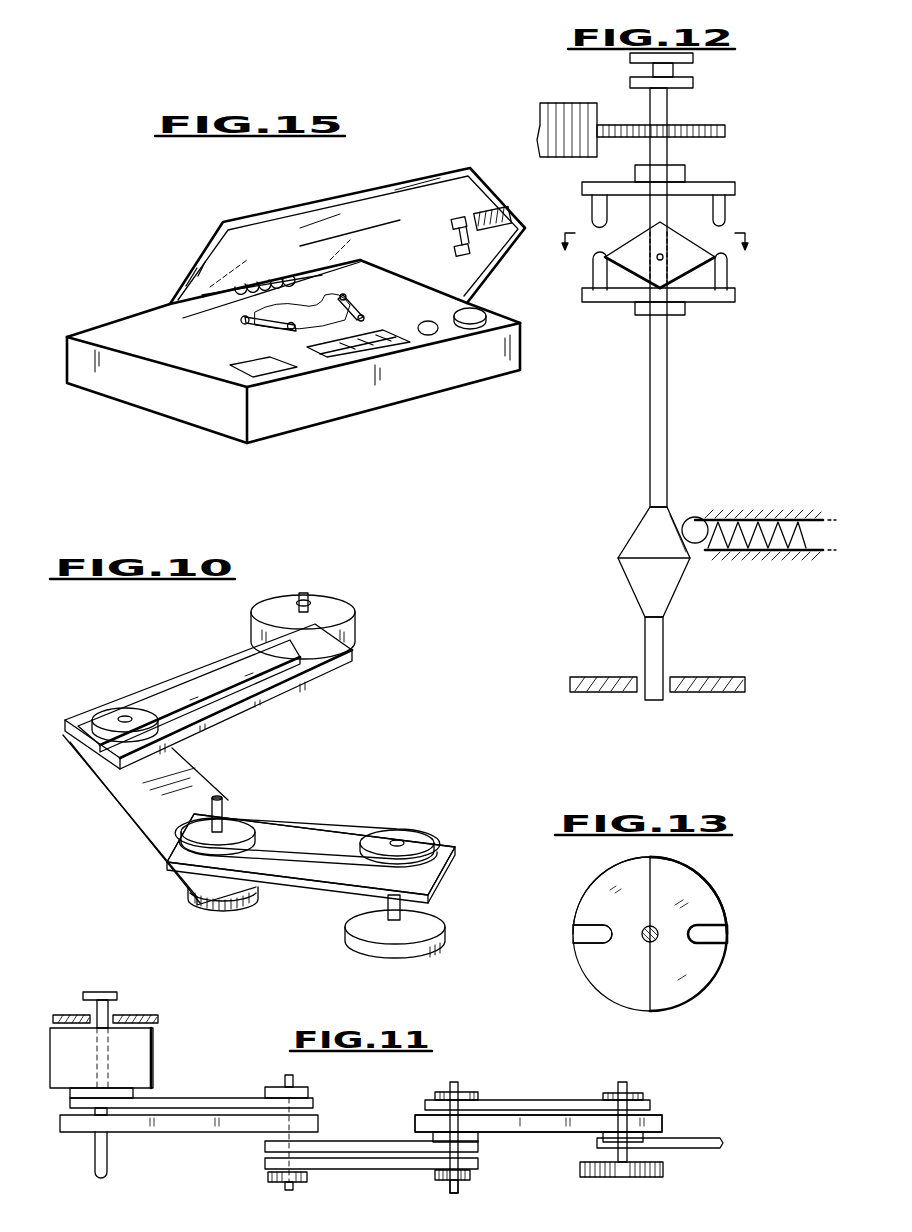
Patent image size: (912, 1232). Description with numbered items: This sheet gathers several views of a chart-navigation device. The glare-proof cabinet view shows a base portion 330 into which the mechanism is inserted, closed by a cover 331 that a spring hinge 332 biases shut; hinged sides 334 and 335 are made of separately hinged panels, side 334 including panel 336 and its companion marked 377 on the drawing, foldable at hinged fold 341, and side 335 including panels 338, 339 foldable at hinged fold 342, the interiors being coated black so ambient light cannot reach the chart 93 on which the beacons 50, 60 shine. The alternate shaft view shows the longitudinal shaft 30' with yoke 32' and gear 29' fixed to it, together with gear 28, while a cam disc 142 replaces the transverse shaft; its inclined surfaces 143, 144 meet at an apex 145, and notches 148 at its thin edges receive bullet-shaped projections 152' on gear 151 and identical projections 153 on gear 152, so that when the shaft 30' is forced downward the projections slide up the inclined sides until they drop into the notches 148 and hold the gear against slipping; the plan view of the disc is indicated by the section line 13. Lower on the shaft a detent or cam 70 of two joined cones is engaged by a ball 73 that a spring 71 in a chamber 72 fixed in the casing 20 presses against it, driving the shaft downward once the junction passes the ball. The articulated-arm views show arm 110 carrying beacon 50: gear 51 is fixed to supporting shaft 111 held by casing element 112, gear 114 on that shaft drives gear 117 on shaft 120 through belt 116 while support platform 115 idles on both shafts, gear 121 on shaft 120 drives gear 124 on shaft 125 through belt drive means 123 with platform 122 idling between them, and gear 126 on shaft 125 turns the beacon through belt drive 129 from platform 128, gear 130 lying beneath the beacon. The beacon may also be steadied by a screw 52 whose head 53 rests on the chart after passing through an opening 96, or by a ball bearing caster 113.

In FIG. 15, the base portion 330 is at (182, 428).
In FIG. 15, the display window 377 is at (130, 352).
In FIG. 15, the hinged fold 341 is at (95, 327).
In FIG. 15, the hinged panel 338 is at (470, 187).
In FIG. 15, the hinged panel 336 is at (178, 244).
In FIG. 15, the hinged fold 342 is at (372, 256).
In FIG. 15, the hinged side 335 is at (495, 207).
In FIG. 15, the hinged side 334 is at (478, 222).
In FIG. 15, the hinged panel 339 is at (478, 270).
In FIG. 15, the cover 331 is at (362, 232).
In FIG. 15, the spring hinge 332 is at (265, 280).
In FIG. 15, the projector beacon 50 is at (246, 320).
In FIG. 10, the projector beacon 50 is at (340, 592).
In FIG. 11, the projector beacon 50 is at (162, 1050).
In FIG. 15, the projector beacon 60 is at (346, 294).
In FIG. 15, the chart 93 is at (405, 312).
In FIG. 11, the chart 93 is at (150, 1015).
In FIG. 15, the casing 20 is at (432, 335).
In FIG. 12, the longitudinal shaft 30' is at (672, 280).
In FIG. 12, the yoke 32' is at (688, 79).
In FIG. 12, the gear 29' is at (681, 129).
In FIG. 12, the gear 28 is at (590, 103).
In FIG. 12, the gear 151 is at (715, 180).
In FIG. 12, the bullet-shaped projections 152' is at (663, 210).
In FIG. 12, the cam disc 142 is at (620, 252).
In FIG. 13, the cam disc 142 is at (720, 907).
In FIG. 12, the inclined surface 143 is at (640, 240).
In FIG. 13, the inclined surface 143 is at (607, 881).
In FIG. 12, the inclined surface 144 is at (696, 240).
In FIG. 13, the inclined surface 144 is at (706, 882).
In FIG. 12, the section line 13 is at (655, 249).
In FIG. 12, the projections 153 is at (727, 275).
In FIG. 12, the gear 152 is at (668, 305).
In FIG. 12, the detent or cam 70 is at (622, 585).
In FIG. 12, the ball 73 is at (700, 545).
In FIG. 12, the spring 71 is at (762, 518).
In FIG. 12, the chamber 72 is at (766, 552).
In FIG. 10, the platform 122 is at (175, 750).
In FIG. 11, the platform 122 is at (380, 1141).
In FIG. 10, the belt drive 129 is at (282, 692).
In FIG. 11, the belt drive 129 is at (220, 1098).
In FIG. 10, the platform 128 is at (218, 643).
In FIG. 11, the platform 128 is at (145, 1132).
In FIG. 10, the gear 126 is at (100, 713).
In FIG. 11, the gear 126 is at (308, 1092).
In FIG. 10, the shaft 125 is at (126, 716).
In FIG. 11, the shaft 125 is at (293, 1080).
In FIG. 10, the articulated arm 110 is at (352, 792).
In FIG. 13, the articulated arm 110 is at (546, 1020).
In FIG. 11, the articulated arm 110 is at (500, 1056).
In FIG. 10, the support platform 115 is at (290, 885).
In FIG. 11, the support platform 115 is at (500, 1132).
In FIG. 10, the motion transmitting belt 116 is at (352, 827).
In FIG. 11, the motion transmitting belt 116 is at (535, 1100).
In FIG. 10, the gear 117 is at (195, 823).
In FIG. 11, the gear 117 is at (478, 1093).
In FIG. 10, the shaft 120 is at (223, 797).
In FIG. 11, the shaft 120 is at (450, 1085).
In FIG. 10, the second gear 114 is at (408, 834).
In FIG. 11, the second gear 114 is at (640, 1093).
In FIG. 10, the gear 121 is at (222, 905).
In FIG. 11, the gear 121 is at (470, 1178).
In FIG. 10, the supporting shaft 111 is at (386, 903).
In FIG. 10, the gear 51 is at (348, 940).
In FIG. 11, the gear 51 is at (580, 1170).
In FIG. 13, the apex 145 is at (652, 878).
In FIG. 13, the notches 148 is at (715, 933).
In FIG. 11, the head 53 is at (115, 992).
In FIG. 11, the screw 52 is at (112, 1010).
In FIG. 11, the opening 96 is at (80, 1014).
In FIG. 11, the gear 130 is at (70, 1092).
In FIG. 11, the ball bearing caster 113 is at (95, 1178).
In FIG. 11, the belt drive means 123 is at (368, 1170).
In FIG. 11, the gear 124 is at (268, 1178).
In FIG. 11, the casing element 112 is at (718, 1138).